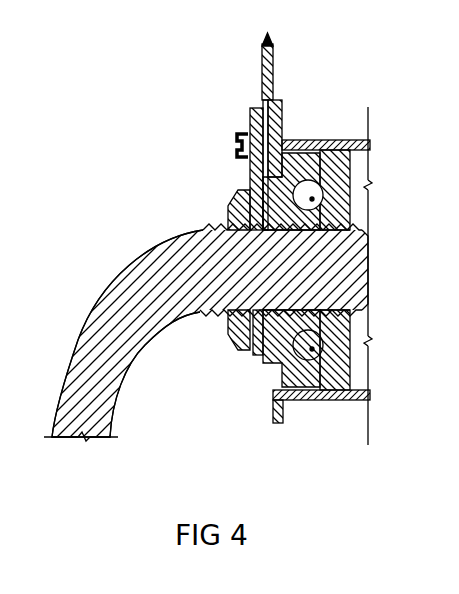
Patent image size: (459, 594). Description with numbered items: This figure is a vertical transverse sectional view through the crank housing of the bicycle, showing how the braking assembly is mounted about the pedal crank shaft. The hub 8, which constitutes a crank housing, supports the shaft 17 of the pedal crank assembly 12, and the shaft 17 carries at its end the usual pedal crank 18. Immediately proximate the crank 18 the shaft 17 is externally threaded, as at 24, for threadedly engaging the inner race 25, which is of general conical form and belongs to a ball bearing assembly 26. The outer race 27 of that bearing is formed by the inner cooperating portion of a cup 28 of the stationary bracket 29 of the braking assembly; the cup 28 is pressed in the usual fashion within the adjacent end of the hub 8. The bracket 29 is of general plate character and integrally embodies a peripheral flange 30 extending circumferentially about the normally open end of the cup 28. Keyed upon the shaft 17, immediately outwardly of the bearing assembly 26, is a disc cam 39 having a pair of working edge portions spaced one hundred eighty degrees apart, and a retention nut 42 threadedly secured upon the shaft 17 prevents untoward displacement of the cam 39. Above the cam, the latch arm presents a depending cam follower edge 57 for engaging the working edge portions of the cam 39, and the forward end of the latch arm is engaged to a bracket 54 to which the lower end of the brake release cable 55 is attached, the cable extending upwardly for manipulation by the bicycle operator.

The support bracket 12 is at (145, 247).
The shaft 17 is at (365, 258).
The pedal crank 18 is at (128, 370).
The hub 8 is at (340, 141).
The external threads 24 is at (330, 226).
The inner race 25 is at (340, 200).
The ball bearing assembly 26 is at (345, 183).
The outer race 27 is at (350, 362).
The cup 28 is at (347, 158).
The bracket 29 is at (290, 136).
The peripheral flange 30 is at (283, 110).
The disc cam 39 is at (248, 192).
The retention nut 42 is at (228, 203).
The bracket 54 is at (250, 120).
The brake release cable 55 is at (262, 68).
The cam follower edge 57 is at (248, 174).